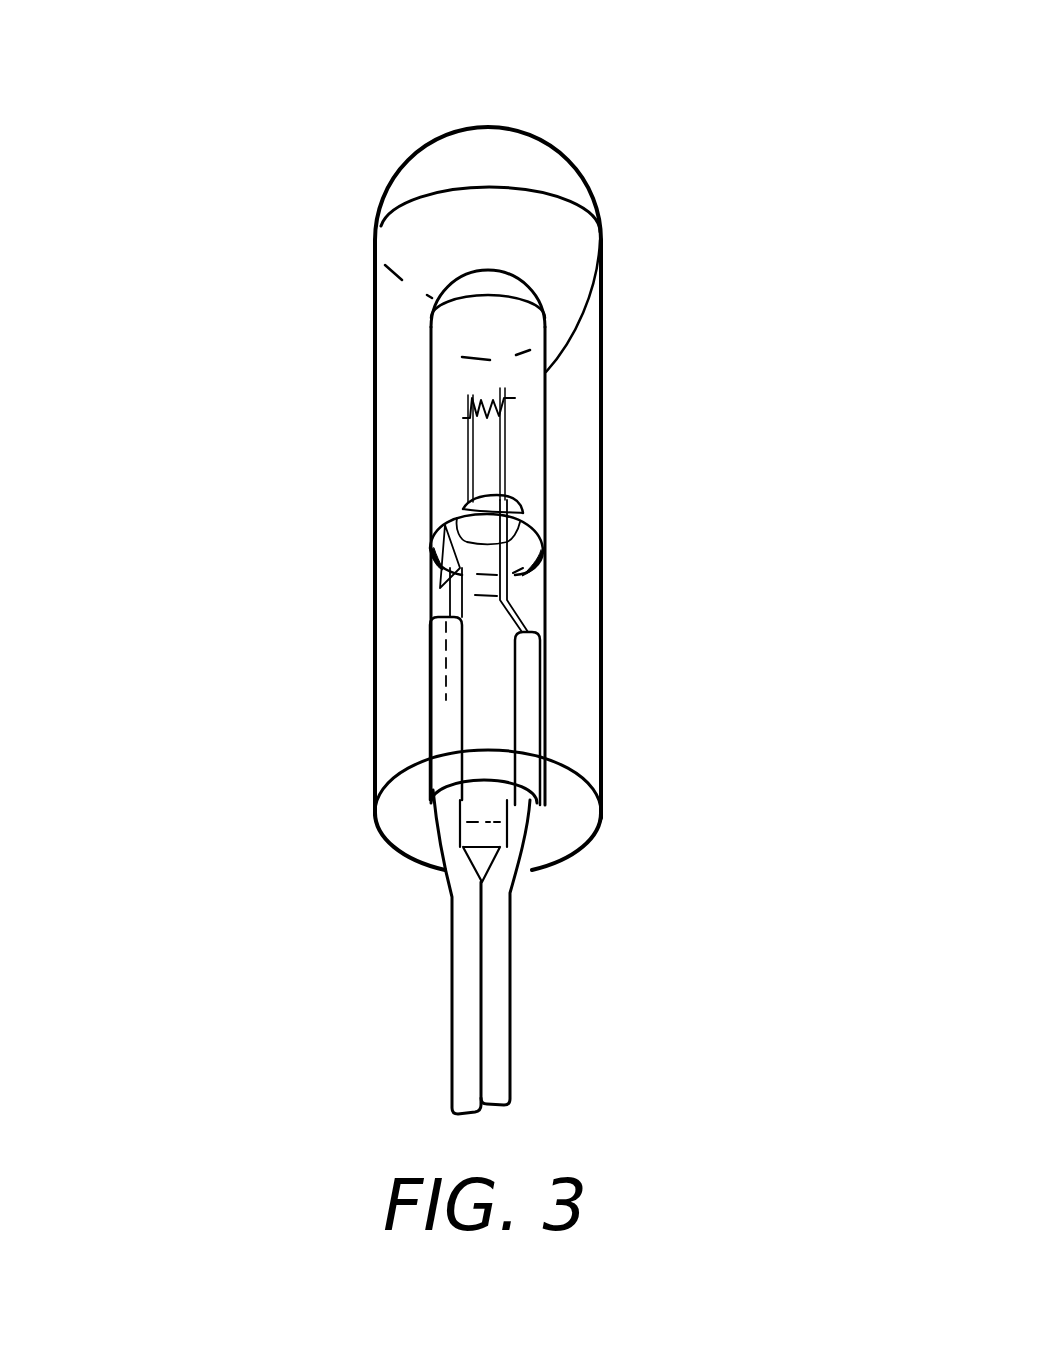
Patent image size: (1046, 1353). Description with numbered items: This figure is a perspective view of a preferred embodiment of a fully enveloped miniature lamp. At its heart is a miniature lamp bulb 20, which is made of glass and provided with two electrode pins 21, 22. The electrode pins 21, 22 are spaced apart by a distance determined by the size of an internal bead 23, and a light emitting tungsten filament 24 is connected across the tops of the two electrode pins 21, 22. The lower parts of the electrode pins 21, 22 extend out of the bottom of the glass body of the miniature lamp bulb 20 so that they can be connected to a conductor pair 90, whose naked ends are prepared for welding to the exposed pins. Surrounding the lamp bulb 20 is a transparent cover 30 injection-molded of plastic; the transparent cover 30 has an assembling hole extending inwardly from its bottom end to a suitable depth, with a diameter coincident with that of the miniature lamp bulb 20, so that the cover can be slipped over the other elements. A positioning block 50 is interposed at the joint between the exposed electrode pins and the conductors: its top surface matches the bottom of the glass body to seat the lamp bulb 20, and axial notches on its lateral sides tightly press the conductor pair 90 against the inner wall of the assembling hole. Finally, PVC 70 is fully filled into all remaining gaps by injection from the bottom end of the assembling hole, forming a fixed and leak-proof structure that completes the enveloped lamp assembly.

The miniature lamp bulb 20 is at (603, 243).
The transparent cover 30 is at (573, 165).
The electrode pin 21 is at (640, 372).
The electrode pin 22 is at (601, 392).
The internal bead 23 is at (455, 505).
The light emitting tungsten filament 24 is at (490, 400).
The positioning block 50 is at (491, 693).
The PVC 70 is at (462, 791).
The conductor pair 90 is at (500, 898).